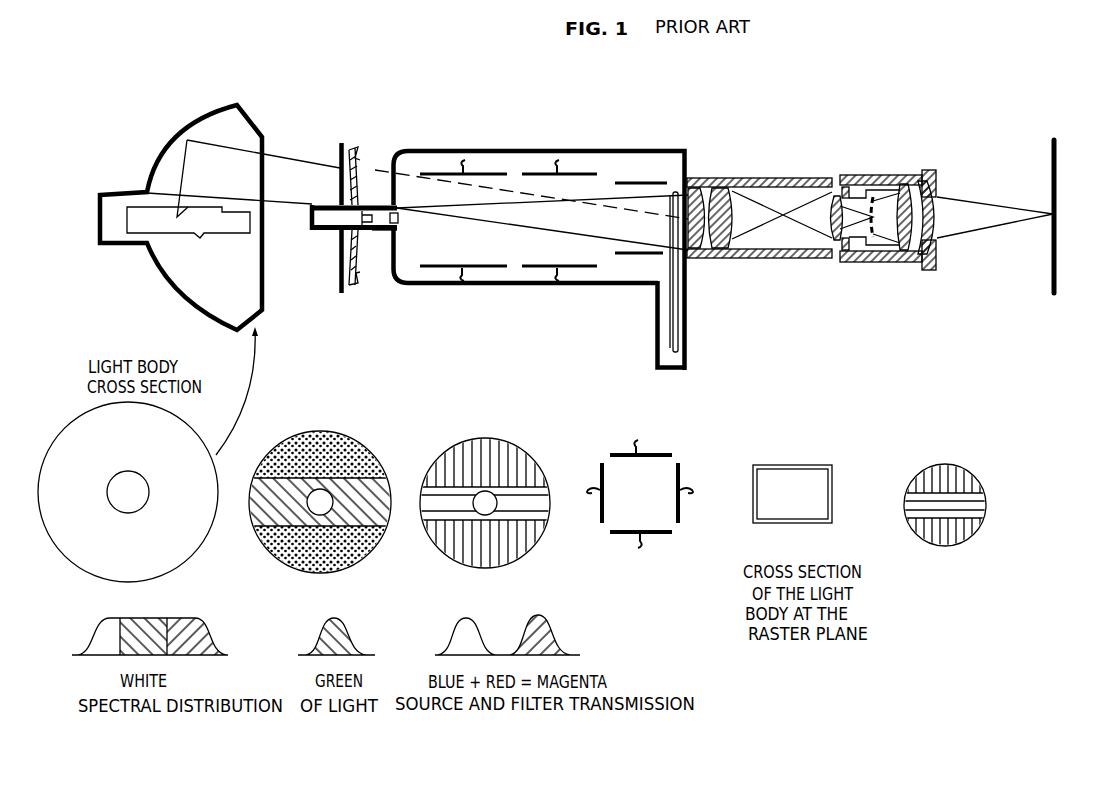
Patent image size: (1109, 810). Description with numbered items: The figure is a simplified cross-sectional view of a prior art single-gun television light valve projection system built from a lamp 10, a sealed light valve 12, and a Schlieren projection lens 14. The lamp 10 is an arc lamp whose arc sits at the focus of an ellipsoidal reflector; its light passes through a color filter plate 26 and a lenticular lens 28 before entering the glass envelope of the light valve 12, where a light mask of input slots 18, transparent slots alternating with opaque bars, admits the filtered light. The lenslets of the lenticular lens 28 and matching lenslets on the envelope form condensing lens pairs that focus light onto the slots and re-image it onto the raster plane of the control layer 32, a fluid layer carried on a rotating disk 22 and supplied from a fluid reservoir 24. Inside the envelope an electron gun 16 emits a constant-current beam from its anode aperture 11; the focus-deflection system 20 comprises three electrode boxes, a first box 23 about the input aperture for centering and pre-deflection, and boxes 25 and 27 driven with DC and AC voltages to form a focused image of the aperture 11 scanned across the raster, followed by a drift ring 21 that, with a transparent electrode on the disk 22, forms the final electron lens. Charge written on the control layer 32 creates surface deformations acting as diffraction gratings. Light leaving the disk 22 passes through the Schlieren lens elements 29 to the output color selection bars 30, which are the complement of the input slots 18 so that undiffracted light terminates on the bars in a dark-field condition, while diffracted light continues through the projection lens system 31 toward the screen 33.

The lamp 10 is at (217, 116).
The anode aperture 11 is at (377, 243).
The sealed light valve 12 is at (608, 149).
The Schlieren projection lens 14 is at (830, 186).
The electron gun 16 is at (320, 205).
The input slots 18 is at (403, 294).
The focus-deflection system 20 is at (627, 302).
The drift ring 21 is at (641, 185).
The rotating disk 22 is at (688, 274).
The electrode box 23 is at (400, 221).
The fluid reservoir 24 is at (657, 343).
The electrode box 25 is at (469, 262).
The color filter plate 26 is at (437, 625).
The electrode box 27 is at (531, 262).
The lenticular lens 28 is at (356, 148).
The Schlieren lens elements 29 is at (832, 167).
The output color selection bars 30 is at (882, 237).
The projection lens system 31 is at (900, 167).
The control layer 32 is at (668, 231).
The screen 33 is at (1077, 124).